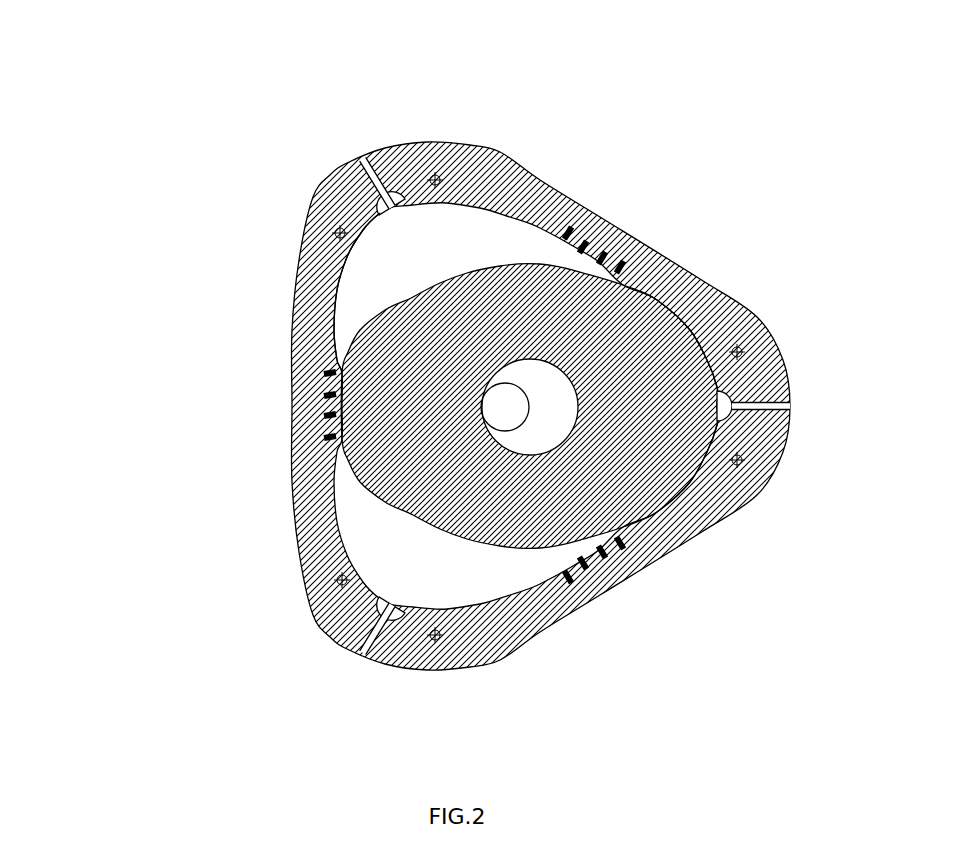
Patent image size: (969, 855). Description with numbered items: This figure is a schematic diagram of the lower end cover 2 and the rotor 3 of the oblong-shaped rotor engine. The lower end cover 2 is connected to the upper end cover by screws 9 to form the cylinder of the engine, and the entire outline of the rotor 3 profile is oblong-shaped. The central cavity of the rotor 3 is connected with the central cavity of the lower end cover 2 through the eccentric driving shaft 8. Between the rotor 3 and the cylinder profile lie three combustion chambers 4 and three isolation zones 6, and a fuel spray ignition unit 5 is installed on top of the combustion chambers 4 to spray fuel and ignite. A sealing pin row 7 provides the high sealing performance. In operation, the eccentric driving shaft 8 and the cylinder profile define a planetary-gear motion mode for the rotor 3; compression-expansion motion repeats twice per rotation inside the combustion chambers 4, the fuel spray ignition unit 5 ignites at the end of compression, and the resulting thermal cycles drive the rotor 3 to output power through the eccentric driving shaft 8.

The lower end cover 2 is at (713, 297).
The rotor 3 is at (520, 318).
The combustion chamber 4 is at (462, 248).
The fuel spray ignition unit 5 is at (390, 200).
The isolation zone 6 is at (325, 318).
The sealing pin row 7 is at (330, 437).
The eccentric driving shaft 8 is at (483, 430).
The screw 9 is at (330, 580).